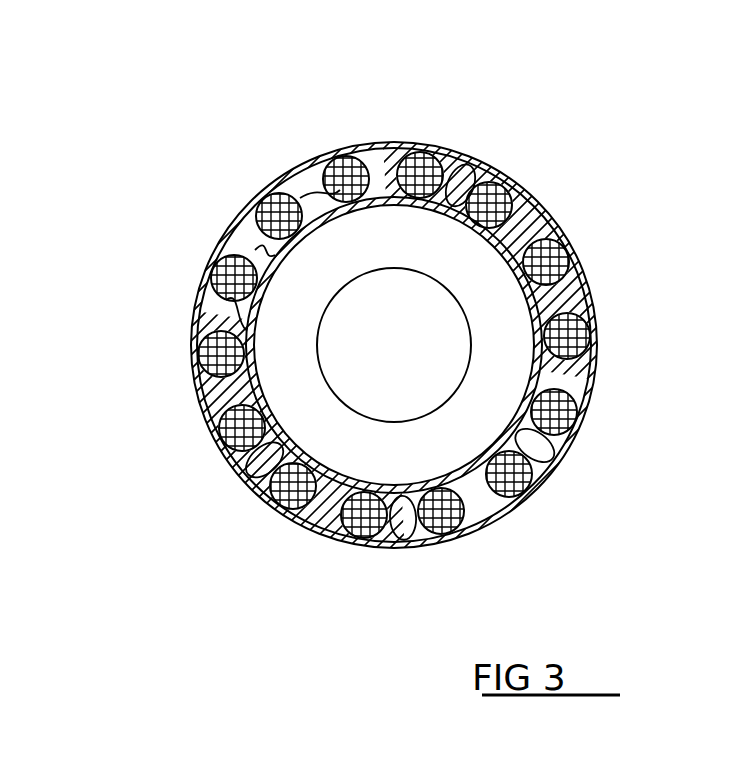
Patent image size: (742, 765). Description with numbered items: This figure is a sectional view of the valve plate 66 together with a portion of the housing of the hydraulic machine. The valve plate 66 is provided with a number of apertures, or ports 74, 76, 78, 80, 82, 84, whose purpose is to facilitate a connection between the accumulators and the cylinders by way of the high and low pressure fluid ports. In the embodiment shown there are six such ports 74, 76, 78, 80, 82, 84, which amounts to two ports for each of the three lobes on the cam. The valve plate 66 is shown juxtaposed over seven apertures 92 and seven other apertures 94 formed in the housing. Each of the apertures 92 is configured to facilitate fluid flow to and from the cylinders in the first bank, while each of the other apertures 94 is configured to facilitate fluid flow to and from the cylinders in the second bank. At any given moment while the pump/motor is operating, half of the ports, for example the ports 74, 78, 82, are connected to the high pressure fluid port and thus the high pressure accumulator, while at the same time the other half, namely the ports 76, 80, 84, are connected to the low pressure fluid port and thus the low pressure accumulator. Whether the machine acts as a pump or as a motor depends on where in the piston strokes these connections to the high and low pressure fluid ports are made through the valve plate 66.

The valve plate 66 is at (470, 145).
The port 74 is at (533, 206).
The port 76 is at (588, 385).
The port 78 is at (487, 521).
The port 80 is at (259, 492).
The port 82 is at (204, 292).
The port 84 is at (310, 170).
The apertures 92 is at (578, 318).
The other apertures 94 is at (399, 168).